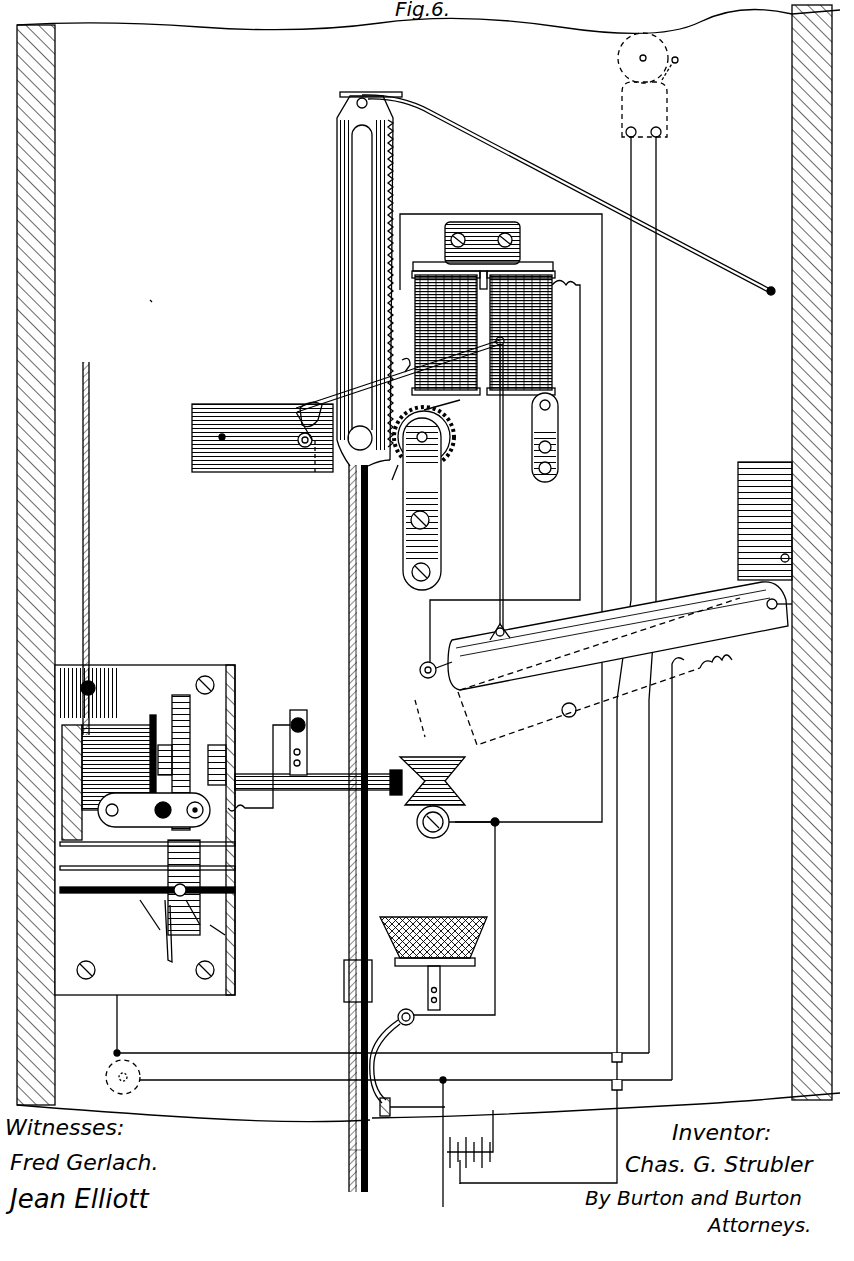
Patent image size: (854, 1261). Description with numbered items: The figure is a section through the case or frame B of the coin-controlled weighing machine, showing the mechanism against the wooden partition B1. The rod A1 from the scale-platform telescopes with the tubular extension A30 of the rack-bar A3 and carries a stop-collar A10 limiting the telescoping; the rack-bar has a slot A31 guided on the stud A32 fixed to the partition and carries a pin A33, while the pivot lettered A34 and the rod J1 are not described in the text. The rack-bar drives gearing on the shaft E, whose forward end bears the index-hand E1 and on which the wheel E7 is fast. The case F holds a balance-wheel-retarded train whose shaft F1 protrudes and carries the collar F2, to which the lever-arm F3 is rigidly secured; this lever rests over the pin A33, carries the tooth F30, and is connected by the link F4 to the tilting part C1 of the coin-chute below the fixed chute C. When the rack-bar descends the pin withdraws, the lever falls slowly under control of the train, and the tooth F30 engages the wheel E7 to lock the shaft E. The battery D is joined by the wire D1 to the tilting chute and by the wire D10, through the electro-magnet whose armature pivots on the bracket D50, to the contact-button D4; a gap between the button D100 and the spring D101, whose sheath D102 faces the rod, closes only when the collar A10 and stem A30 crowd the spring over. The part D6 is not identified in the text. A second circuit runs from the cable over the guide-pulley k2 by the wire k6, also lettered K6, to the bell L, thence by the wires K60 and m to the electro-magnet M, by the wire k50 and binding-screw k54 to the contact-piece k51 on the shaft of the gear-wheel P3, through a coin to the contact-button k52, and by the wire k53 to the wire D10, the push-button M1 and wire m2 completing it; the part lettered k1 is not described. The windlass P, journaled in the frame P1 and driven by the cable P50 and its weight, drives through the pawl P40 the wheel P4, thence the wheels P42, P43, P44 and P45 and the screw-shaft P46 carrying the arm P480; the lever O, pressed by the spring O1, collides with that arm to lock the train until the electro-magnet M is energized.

The rack-bar A3 is at (393, 178).
The slot A31 is at (365, 288).
The stud A32 is at (358, 448).
The pin A33 is at (306, 404).
The pivot pin A34 is at (358, 105).
The tubular extension A30 is at (370, 655).
The stop-collar A10 is at (372, 977).
The rod A1 is at (368, 1140).
The case or frame B is at (55, 343).
The wooden partition B1 is at (168, 317).
The rod J1 is at (540, 165).
The bell L is at (670, 86).
The electric battery D is at (483, 695).
The armature D6 is at (459, 414).
The bracket D50 is at (540, 406).
The circuit-wire D10 is at (602, 505).
The contact-button D4 is at (425, 678).
The circuit-wire D1 is at (672, 690).
The button D100 is at (433, 976).
The spring D101 is at (370, 1047).
The non-conducting sheath D102 is at (330, 1046).
The shaft E is at (422, 504).
The index-hand E1 is at (396, 474).
The wheel E7 is at (452, 445).
The case F is at (262, 438).
The shaft F1 is at (296, 438).
The collar F2 is at (293, 438).
The lever-arm F3 is at (340, 396).
The tooth F30 is at (401, 359).
The link F4 is at (503, 498).
The wire K6 is at (640, 355).
The wire K60 is at (655, 425).
The contact block k1 is at (428, 770).
The guide-pulley k2 is at (440, 1192).
The wire k6 is at (459, 1157).
The wire k50 is at (259, 768).
The contact-piece k51 is at (311, 742).
The contact-button k52 is at (440, 840).
The wire k53 is at (522, 828).
The binding-screw k54 is at (298, 720).
The fixed part of the coin-chute C is at (750, 521).
The tilting part of the coin-chute C1 is at (620, 663).
The windlass or drum P is at (109, 776).
The frame P1 is at (145, 830).
The gear-wheel P3 is at (236, 758).
The wheel P4 is at (192, 762).
The pawl P40 is at (235, 893).
The wheel P42 is at (200, 858).
The wheel P43 is at (190, 846).
The wheel P44 is at (205, 880).
The wheel P45 is at (110, 938).
The screw-shaft P46 is at (205, 900).
The arm P480 is at (228, 933).
The cable P50 is at (89, 530).
The electro-magnet M is at (200, 820).
The push-button M1 is at (105, 1077).
The wire m is at (118, 1020).
The wire m2 is at (406, 1092).
The lever O is at (170, 862).
The spring O1 is at (157, 936).